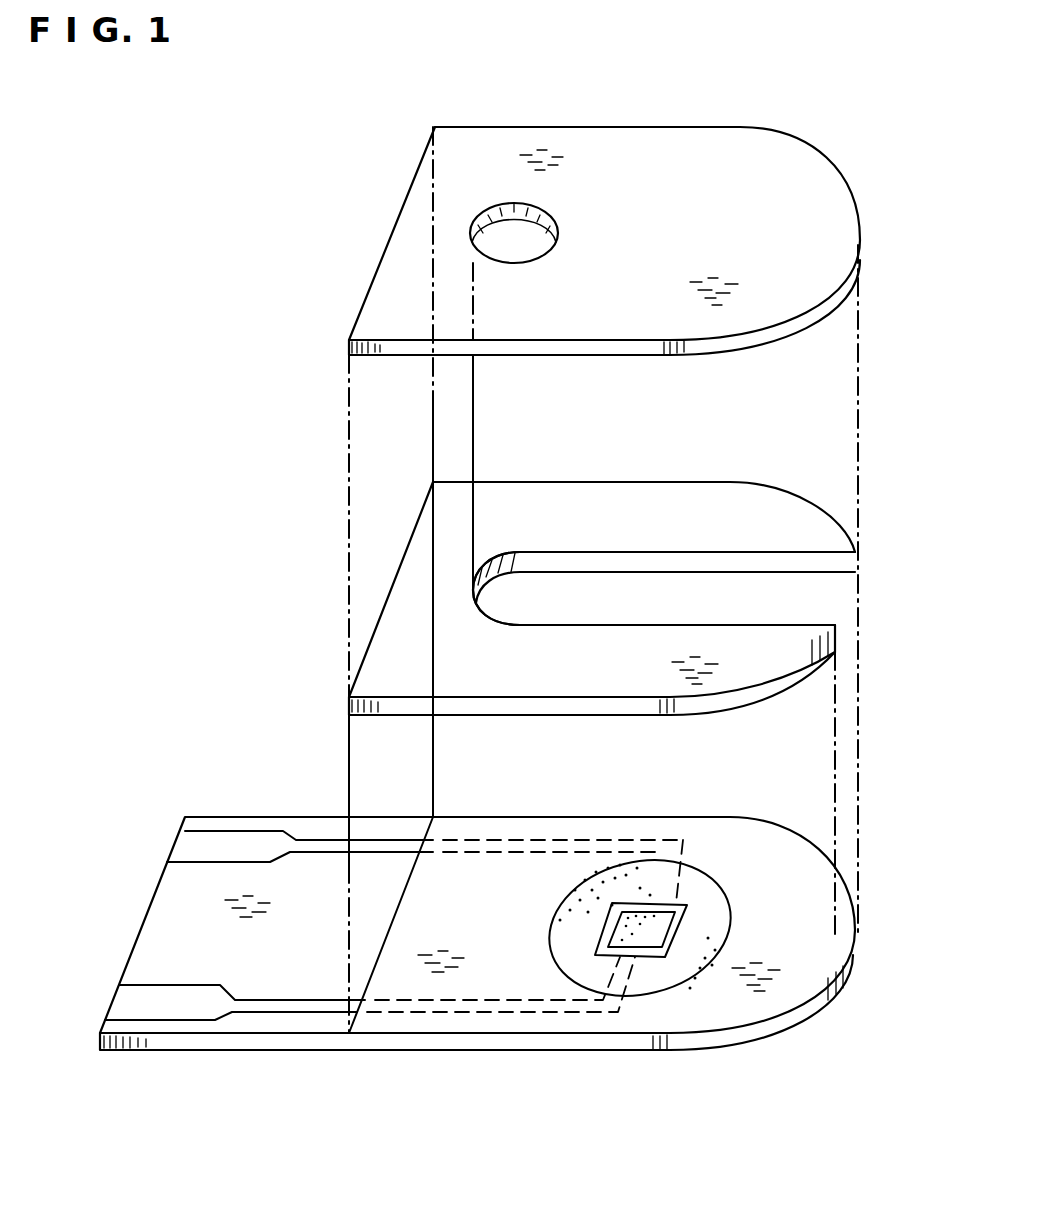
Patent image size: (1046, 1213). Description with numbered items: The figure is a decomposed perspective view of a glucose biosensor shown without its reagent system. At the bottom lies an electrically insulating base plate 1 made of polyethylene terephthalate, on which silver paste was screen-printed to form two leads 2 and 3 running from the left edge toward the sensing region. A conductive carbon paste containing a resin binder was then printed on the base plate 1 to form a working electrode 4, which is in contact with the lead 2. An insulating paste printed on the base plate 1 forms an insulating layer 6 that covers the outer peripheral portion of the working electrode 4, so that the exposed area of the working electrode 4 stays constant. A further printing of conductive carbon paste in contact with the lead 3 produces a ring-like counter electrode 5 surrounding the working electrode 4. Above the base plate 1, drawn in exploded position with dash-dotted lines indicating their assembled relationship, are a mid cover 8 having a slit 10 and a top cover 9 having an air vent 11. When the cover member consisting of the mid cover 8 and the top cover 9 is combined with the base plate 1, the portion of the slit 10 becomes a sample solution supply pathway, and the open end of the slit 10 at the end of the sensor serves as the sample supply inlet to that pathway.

The base plate 1 is at (180, 910).
The lead 2 is at (140, 1003).
The lead 3 is at (200, 845).
The working electrode 4 is at (652, 928).
The counter electrode 5 is at (700, 888).
The insulating layer 6 is at (507, 980).
The mid cover 8 is at (412, 592).
The top cover 9 is at (405, 247).
The slit 10 is at (808, 603).
The air vent 11 is at (492, 232).